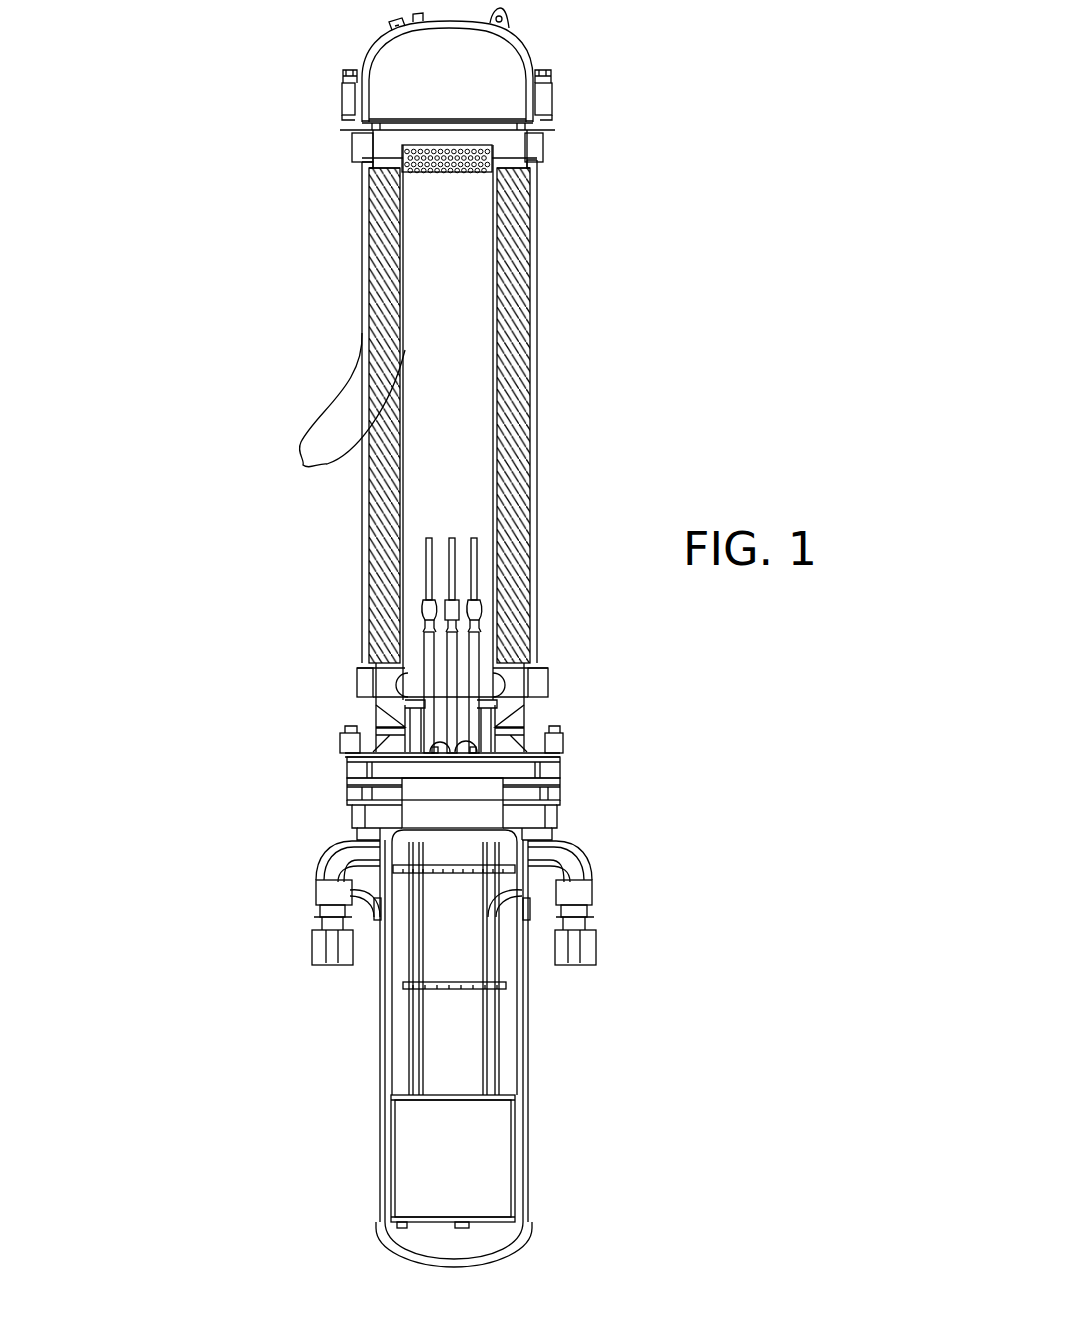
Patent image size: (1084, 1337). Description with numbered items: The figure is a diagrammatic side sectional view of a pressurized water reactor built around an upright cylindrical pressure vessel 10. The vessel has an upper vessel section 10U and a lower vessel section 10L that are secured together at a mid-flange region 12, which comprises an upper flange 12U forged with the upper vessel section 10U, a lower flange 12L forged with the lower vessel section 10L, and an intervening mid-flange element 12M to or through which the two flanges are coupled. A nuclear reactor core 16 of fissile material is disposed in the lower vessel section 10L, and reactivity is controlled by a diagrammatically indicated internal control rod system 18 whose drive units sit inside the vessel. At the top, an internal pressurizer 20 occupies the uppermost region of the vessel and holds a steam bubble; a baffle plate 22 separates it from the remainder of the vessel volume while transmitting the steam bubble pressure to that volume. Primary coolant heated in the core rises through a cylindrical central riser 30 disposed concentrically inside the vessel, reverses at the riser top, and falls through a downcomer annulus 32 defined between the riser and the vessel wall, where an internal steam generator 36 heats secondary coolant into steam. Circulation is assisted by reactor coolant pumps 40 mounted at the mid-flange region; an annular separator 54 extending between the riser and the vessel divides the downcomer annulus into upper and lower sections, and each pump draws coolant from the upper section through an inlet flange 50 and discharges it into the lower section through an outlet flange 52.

The cylindrical pressure vessel 10 is at (657, 385).
The upper vessel section 10U is at (537, 258).
The lower vessel section 10L is at (528, 1173).
The mid-flange region 12 is at (607, 662).
The upper flange 12U is at (552, 742).
The mid-flange element 12M is at (552, 768).
The lower flange 12L is at (552, 785).
The nuclear reactor core 16 is at (455, 1168).
The control rod system 18 is at (418, 541).
The internal pressurizer 20 is at (436, 86).
The baffle plate 22 is at (475, 118).
The cylindrical central riser 30 is at (398, 319).
The downcomer annulus 32 is at (344, 415).
The internal steam generator 36 is at (383, 217).
The reactor coolant pump 40 is at (302, 913).
The inlet flange 50 is at (563, 860).
The outlet flange 52 is at (540, 913).
The annular separator 54 is at (458, 852).